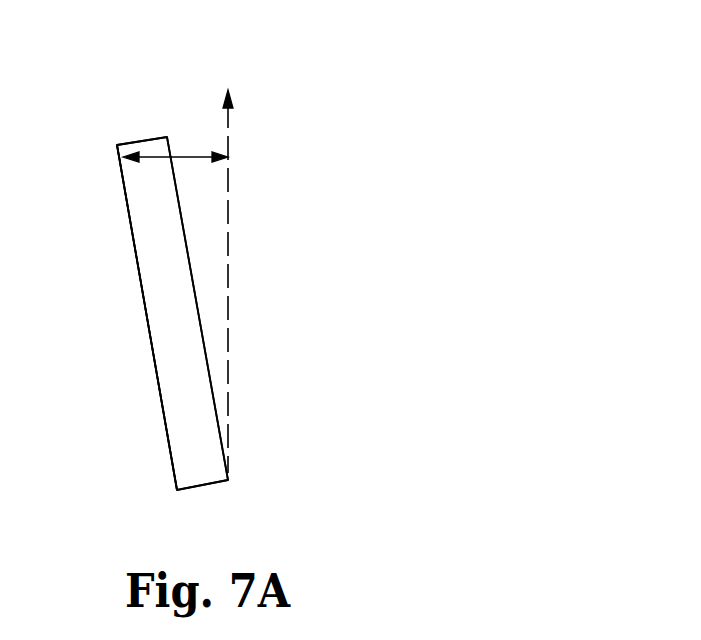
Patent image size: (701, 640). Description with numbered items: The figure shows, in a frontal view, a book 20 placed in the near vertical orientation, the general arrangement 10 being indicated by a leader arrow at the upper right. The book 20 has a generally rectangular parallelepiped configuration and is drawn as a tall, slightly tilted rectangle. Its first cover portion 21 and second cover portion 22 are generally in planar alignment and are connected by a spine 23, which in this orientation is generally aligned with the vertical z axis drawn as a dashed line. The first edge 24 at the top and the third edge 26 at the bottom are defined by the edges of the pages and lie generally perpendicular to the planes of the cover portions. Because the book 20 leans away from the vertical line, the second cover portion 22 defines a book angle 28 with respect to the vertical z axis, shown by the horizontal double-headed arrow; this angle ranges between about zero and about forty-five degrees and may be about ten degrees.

The coordinate system / device orientation 10 is at (280, 78).
The book 20 is at (178, 327).
The first cover portion 21 is at (173, 143).
The second cover portion 22 is at (118, 153).
The spine 23 is at (142, 240).
The first edge 24 is at (142, 139).
The third edge 26 is at (195, 487).
The book angle 28 is at (180, 156).